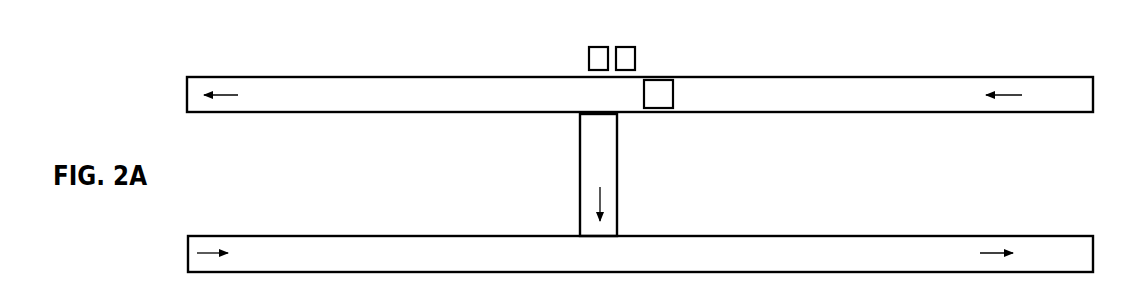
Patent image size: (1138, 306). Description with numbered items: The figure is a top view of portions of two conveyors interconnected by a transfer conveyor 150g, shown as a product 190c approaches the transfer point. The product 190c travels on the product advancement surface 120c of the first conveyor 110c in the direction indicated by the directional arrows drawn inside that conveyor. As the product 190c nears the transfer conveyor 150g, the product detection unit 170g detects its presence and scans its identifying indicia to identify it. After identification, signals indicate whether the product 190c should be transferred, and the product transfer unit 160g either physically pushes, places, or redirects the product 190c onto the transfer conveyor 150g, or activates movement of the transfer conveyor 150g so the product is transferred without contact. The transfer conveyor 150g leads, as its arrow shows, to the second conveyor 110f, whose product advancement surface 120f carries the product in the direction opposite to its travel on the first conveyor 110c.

The first conveyor 110c is at (1013, 77).
The product advancement surface of the first conveyor 120c is at (885, 107).
The second conveyor 110f is at (1033, 235).
The product advancement surface of the second conveyor 120f is at (885, 263).
The transfer conveyor 150g is at (618, 185).
The product transfer unit 160g is at (588, 55).
The product detection unit 170g is at (626, 47).
The product 190c is at (673, 93).